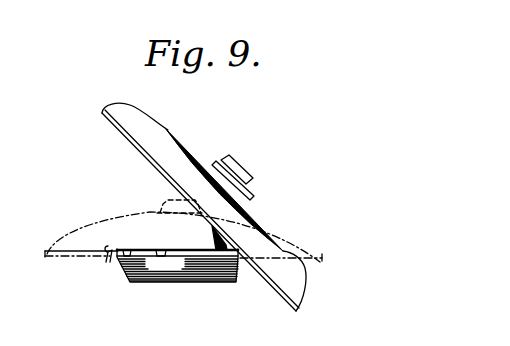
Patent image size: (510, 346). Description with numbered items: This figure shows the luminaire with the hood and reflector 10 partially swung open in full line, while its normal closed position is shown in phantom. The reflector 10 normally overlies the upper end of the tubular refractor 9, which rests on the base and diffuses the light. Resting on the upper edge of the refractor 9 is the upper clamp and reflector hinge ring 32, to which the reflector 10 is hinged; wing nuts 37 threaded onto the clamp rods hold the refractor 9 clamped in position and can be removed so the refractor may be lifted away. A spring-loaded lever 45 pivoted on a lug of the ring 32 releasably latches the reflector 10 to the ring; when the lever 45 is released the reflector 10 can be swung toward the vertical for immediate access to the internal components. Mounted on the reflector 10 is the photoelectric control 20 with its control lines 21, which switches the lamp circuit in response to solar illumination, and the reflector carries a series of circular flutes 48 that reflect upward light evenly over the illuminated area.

The refractor 9 is at (131, 282).
The hood and reflector 10 is at (135, 122).
The photoelectric control 20 is at (253, 185).
The control lines 21 is at (224, 240).
The upper clamp and reflector hinge ring 32 is at (127, 249).
The wing nuts 37 is at (161, 249).
The spring-loaded lever 45 is at (105, 245).
The circular flutes 48 is at (173, 136).